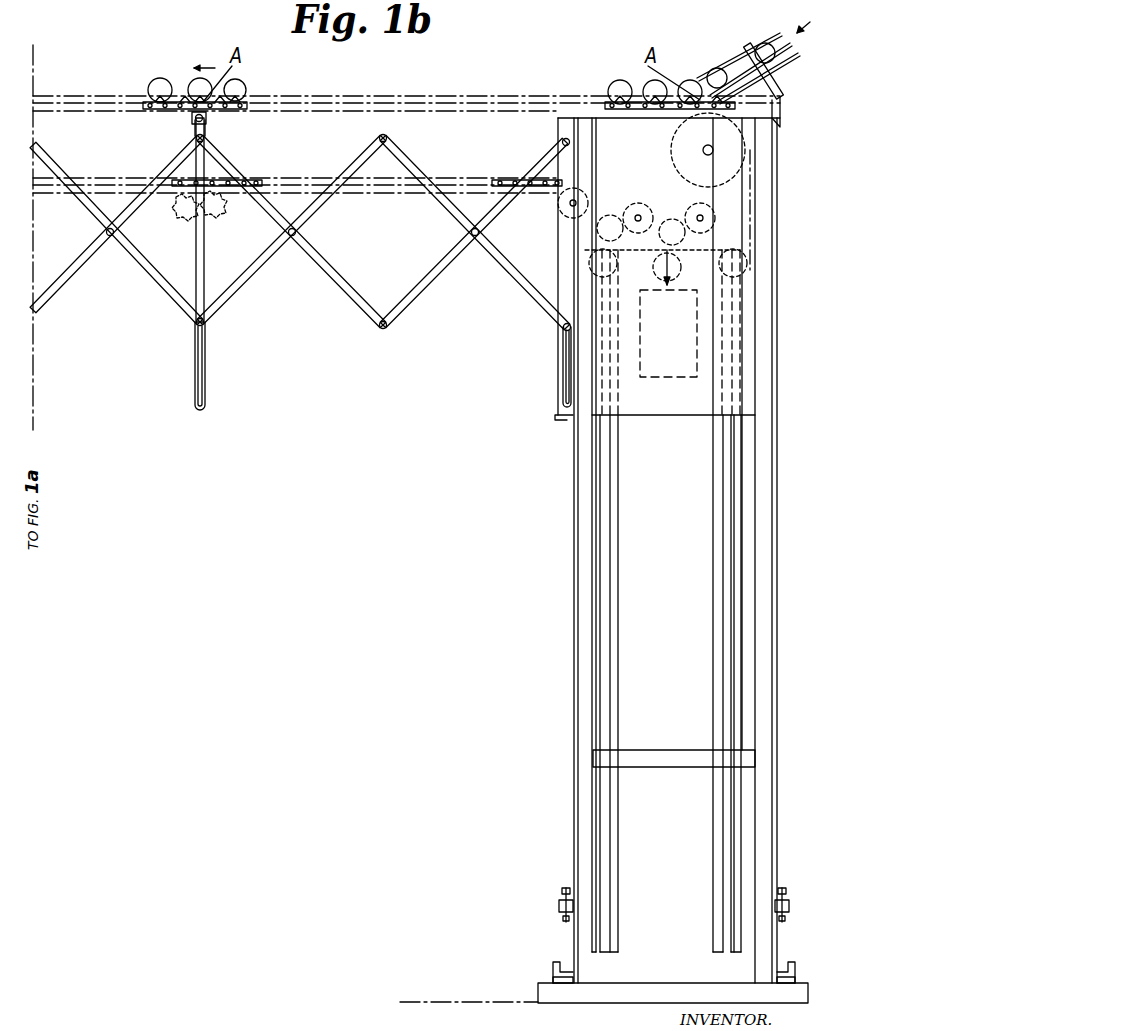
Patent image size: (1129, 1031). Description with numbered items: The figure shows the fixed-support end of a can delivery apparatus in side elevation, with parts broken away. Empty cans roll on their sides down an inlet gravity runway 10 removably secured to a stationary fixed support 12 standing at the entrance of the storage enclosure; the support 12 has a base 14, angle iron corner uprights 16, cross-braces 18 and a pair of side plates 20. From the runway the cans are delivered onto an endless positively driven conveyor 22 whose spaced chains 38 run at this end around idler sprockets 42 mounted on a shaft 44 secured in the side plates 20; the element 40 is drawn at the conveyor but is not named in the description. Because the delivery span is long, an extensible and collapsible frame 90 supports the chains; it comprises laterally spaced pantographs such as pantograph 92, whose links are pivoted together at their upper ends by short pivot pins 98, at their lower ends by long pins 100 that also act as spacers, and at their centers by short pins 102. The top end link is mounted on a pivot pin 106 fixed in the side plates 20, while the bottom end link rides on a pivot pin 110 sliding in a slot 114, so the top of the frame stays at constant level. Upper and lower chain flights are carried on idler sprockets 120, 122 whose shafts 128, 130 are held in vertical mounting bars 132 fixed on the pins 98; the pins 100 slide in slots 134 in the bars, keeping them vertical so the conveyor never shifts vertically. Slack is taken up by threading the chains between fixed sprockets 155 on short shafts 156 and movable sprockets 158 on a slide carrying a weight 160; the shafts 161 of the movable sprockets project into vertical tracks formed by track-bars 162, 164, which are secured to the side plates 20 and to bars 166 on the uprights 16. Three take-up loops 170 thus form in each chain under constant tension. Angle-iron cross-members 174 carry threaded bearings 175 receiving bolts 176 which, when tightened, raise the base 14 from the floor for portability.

The inlet gravity runway 10 is at (738, 64).
The fixed support 12 is at (638, 558).
The base 14 is at (545, 990).
The angle iron corner uprights 16 is at (764, 525).
The cross-braces 18 is at (558, 428).
The side plates 20 is at (662, 417).
The endless positively driven conveyor 22 is at (440, 96).
The conveyor chains 38 is at (150, 100).
The roller carriage 40 is at (240, 102).
The idler sprockets 42 is at (672, 134).
The shaft 44 is at (704, 148).
The extensible and collapsible frame 90 is at (320, 272).
The pantograph 92 is at (448, 268).
The short pivot pins 98 is at (205, 138).
The long pins 100 is at (204, 322).
The short pins 102 is at (106, 232).
The pivot pin 106 is at (569, 141).
The pivot pin 110 is at (563, 327).
The slot 114 is at (563, 368).
The idler sprockets 120 is at (192, 120).
The idler sprockets 122 is at (213, 207).
The transverse shaft 128 is at (196, 132).
The transverse shaft 130 is at (186, 209).
The vertical mounting bars 132 is at (204, 247).
The slots 134 is at (205, 373).
The fixed sprockets 155 is at (636, 215).
The short shafts 156 is at (574, 200).
The movable sprockets 158 is at (745, 247).
The weight 160 is at (644, 380).
The transverse shafts 161 is at (600, 250).
The track-bars 162 is at (596, 691).
The track-bars 164 is at (610, 706).
The bars 166 is at (662, 752).
The take-up loops 170 is at (785, 206).
The angle-iron cross-members 174 is at (570, 893).
The threaded bearings 175 is at (558, 906).
The bolts 176 is at (561, 889).